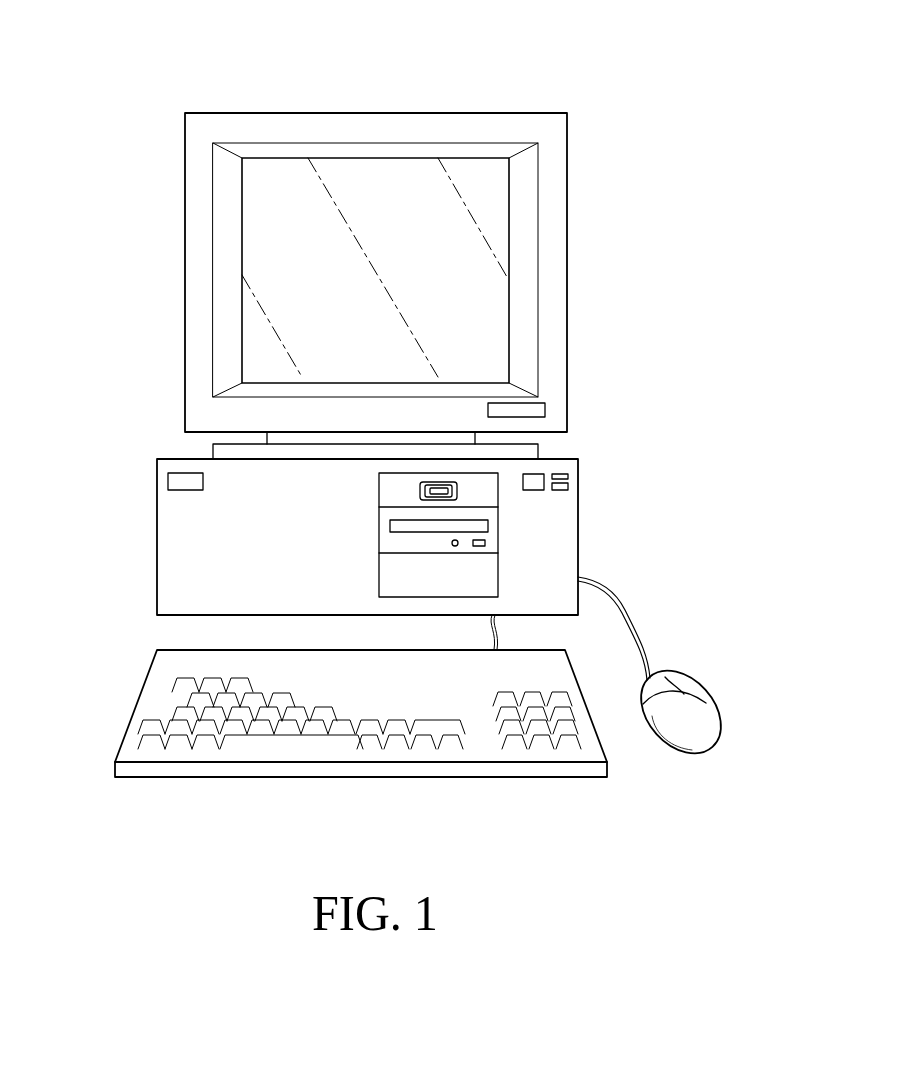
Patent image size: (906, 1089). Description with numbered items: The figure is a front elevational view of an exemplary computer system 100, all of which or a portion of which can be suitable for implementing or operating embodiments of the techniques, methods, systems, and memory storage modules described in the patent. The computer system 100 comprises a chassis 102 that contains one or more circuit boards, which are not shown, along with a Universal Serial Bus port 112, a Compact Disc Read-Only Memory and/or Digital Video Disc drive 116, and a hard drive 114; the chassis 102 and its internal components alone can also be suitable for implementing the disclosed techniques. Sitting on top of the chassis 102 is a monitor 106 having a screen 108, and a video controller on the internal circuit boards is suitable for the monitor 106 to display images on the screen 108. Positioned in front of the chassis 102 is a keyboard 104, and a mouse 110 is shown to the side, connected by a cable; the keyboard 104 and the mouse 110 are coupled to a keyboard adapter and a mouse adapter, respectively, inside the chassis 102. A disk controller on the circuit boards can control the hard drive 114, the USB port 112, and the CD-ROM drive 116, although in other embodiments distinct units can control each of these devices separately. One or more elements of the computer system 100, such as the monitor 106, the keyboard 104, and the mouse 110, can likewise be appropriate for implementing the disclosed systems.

The computer system 100 is at (559, 87).
The chassis 102 is at (157, 538).
The keyboard 104 is at (137, 700).
The monitor 106 is at (262, 113).
The screen 108 is at (290, 275).
The mouse 110 is at (698, 707).
The Universal Serial Bus (USB) port 112 is at (458, 489).
The hard drive 114 is at (490, 575).
The Compact Disc Read-Only Memory (CD-ROM) and/or Digital Video Disc (DVD) drive 116 is at (490, 533).